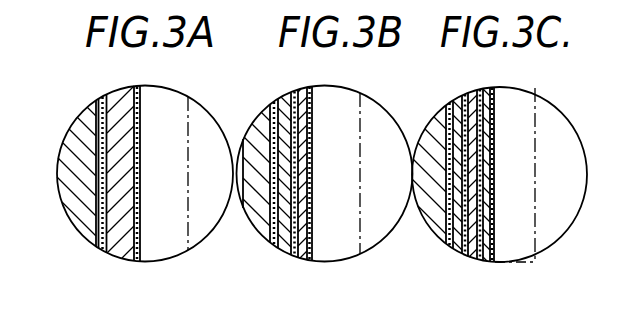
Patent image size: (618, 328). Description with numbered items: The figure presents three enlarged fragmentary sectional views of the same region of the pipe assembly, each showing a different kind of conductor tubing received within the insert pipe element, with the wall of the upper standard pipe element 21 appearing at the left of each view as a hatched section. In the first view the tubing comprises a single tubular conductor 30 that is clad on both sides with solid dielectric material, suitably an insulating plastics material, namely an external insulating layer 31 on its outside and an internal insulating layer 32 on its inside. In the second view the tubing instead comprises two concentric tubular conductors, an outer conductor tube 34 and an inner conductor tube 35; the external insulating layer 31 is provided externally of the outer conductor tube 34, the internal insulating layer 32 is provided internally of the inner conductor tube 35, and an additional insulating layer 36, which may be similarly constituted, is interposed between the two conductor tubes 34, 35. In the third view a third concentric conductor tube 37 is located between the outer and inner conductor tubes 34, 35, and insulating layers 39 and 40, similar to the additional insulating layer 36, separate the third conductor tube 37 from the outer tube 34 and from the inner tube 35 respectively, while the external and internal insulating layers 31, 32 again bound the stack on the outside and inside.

In FIG. 3A, the upper standard pipe element 21 is at (77, 200).
In FIG. 3B, the upper standard pipe element 21 is at (260, 222).
In FIG. 3C, the upper standard pipe element 21 is at (438, 217).
In FIG. 3A, the tubular conductor 30 is at (120, 239).
In FIG. 3A, the external insulating layer 31 is at (103, 97).
In FIG. 3B, the external insulating layer 31 is at (254, 112).
In FIG. 3C, the external insulating layer 31 is at (430, 115).
In FIG. 3A, the internal insulating layer 32 is at (139, 100).
In FIG. 3B, the internal insulating layer 32 is at (313, 117).
In FIG. 3C, the internal insulating layer 32 is at (493, 150).
In FIG. 3B, the outer conductor tube 34 is at (285, 252).
In FIG. 3C, the outer conductor tube 34 is at (458, 253).
In FIG. 3B, the inner conductor tube 35 is at (297, 253).
In FIG. 3C, the inner conductor tube 35 is at (480, 247).
In FIG. 3B, the additional insulating layer 36 is at (302, 98).
In FIG. 3C, the third concentric conductor tube 37 is at (468, 255).
In FIG. 3C, the insulating layer 39 is at (466, 88).
In FIG. 3C, the insulating layer 40 is at (486, 100).